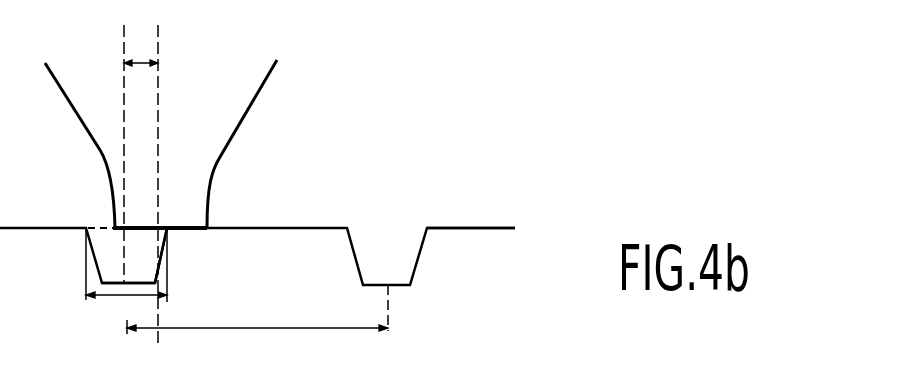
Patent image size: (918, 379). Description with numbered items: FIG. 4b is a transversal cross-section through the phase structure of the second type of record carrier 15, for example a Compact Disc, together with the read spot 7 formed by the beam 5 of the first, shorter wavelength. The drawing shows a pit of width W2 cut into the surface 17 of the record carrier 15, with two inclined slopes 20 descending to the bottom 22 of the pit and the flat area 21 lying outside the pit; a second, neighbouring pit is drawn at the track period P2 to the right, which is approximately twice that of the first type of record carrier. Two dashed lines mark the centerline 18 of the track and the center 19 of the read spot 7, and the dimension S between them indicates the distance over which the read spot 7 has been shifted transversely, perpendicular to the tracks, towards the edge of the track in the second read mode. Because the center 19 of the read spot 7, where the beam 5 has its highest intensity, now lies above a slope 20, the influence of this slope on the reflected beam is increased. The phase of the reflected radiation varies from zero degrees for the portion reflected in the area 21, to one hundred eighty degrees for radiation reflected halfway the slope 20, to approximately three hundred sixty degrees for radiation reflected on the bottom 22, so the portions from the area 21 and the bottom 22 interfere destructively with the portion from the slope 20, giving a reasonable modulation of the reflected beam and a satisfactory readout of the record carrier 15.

The beam 5 is at (248, 112).
The read spot 7 is at (189, 224).
The record carrier 15 is at (551, 292).
The substrate surface 17 is at (460, 228).
The centerline 18 is at (122, 37).
The center 19 is at (162, 228).
The slope 20 is at (163, 250).
The area 21 is at (186, 232).
The bottom 22 is at (140, 284).
The distance S is at (148, 63).
The width W2 is at (118, 298).
The track period P2 is at (275, 331).